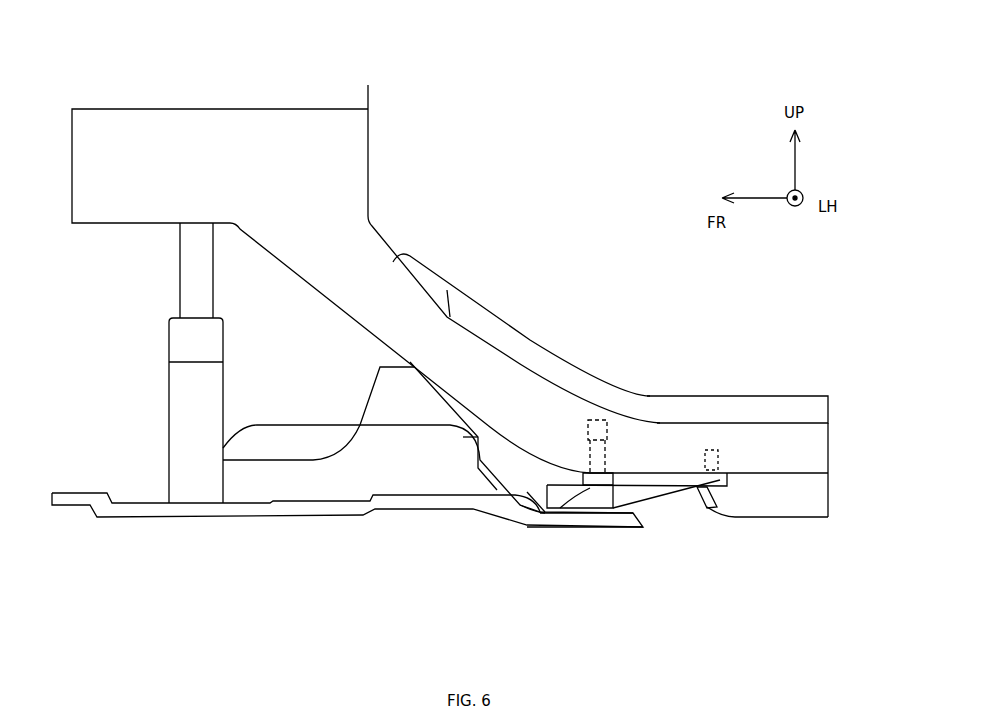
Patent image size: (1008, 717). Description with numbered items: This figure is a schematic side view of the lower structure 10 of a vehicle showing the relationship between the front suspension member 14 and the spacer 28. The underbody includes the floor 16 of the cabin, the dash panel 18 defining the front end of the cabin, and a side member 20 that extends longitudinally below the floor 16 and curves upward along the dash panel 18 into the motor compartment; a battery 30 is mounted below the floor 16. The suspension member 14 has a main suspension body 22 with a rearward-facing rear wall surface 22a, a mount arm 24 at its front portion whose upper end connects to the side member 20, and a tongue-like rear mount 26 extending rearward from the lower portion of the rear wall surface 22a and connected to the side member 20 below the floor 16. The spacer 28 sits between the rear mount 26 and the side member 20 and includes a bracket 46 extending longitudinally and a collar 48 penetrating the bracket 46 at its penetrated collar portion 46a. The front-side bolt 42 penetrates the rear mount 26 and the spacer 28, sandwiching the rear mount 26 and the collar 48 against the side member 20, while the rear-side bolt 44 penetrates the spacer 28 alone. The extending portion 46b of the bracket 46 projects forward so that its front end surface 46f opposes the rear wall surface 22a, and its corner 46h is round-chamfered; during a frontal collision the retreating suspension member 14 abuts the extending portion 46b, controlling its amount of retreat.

The lower structure 10 is at (562, 175).
The front suspension member 14 is at (293, 542).
The floor 16 is at (800, 423).
The dash panel 18 is at (372, 147).
The side member 20 is at (147, 138).
The main suspension body 22 is at (367, 463).
The rear wall surface 22a is at (483, 470).
The mount arm 24 is at (180, 342).
The rear mount 26 is at (535, 518).
The spacer 28 is at (667, 510).
The battery 30 is at (780, 505).
The bolt 42 is at (603, 458).
The bolt 44 is at (723, 450).
The bracket 46 is at (645, 497).
The penetrated collar portion 46a is at (575, 525).
The extending portion 46b is at (556, 490).
The front end surface 46f is at (527, 492).
The corner 46h is at (560, 508).
The collar 48 is at (637, 473).